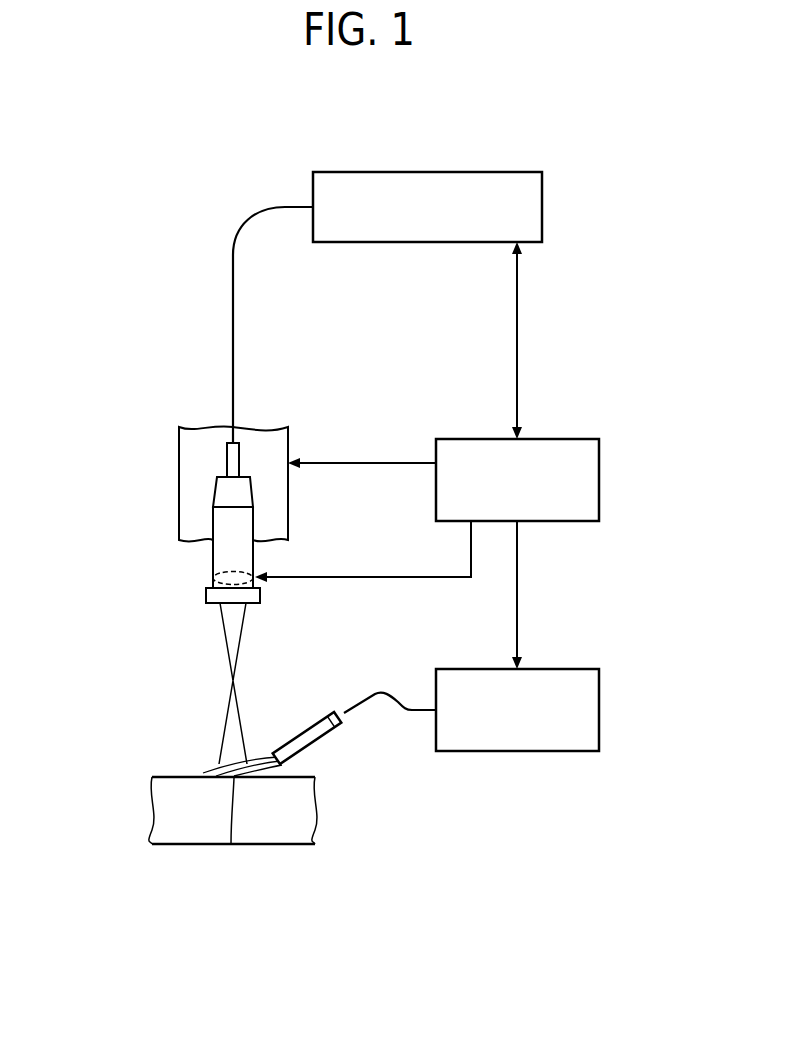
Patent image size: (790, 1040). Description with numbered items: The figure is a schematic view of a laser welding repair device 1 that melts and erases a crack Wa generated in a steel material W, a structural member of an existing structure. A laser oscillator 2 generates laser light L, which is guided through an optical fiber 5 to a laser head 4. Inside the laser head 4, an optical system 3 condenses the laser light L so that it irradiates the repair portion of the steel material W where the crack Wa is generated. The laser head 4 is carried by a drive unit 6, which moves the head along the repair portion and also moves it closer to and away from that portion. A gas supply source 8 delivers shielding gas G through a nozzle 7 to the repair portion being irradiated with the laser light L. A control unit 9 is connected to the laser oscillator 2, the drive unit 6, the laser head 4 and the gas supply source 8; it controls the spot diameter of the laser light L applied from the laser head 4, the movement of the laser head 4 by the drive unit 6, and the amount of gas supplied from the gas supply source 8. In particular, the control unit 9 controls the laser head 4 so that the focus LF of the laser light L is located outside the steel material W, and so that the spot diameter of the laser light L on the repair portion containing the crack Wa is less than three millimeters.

The laser welding repair device 1 is at (172, 260).
The laser oscillator 2 is at (360, 180).
The optical system 3 is at (226, 578).
The laser head 4 is at (218, 518).
The optical fiber 5 is at (233, 333).
The drive unit 6 is at (187, 458).
The nozzle 7 is at (322, 732).
The gas supply source 8 is at (585, 692).
The control unit 9 is at (585, 463).
The laser light L is at (227, 635).
The focus LF is at (233, 679).
The shielding gas G is at (217, 765).
The steel material W is at (167, 810).
The crack Wa is at (232, 812).